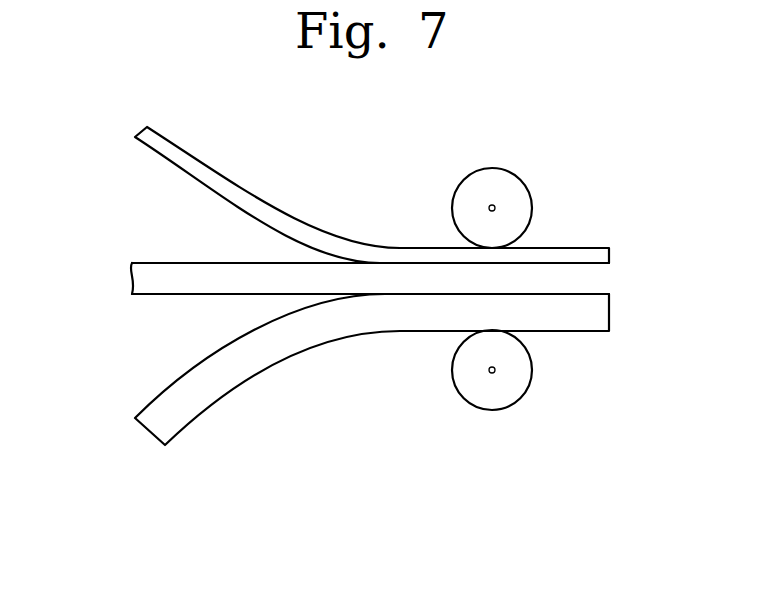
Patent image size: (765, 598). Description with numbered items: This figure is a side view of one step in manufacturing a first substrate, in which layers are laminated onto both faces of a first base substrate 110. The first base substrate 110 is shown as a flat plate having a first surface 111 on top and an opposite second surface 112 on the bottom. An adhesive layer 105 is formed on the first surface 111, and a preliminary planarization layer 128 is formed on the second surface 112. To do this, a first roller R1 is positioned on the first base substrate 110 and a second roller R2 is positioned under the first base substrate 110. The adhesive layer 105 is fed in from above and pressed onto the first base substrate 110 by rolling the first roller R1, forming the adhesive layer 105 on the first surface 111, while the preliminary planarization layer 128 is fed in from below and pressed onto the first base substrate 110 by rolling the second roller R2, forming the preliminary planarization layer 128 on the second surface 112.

The adhesive layer 105 is at (597, 257).
The first base substrate 110 is at (597, 283).
The first surface 111 is at (160, 263).
The second surface 112 is at (160, 294).
The preliminary planarization layer 128 is at (597, 315).
The first roller R1 is at (518, 207).
The second roller R2 is at (518, 368).